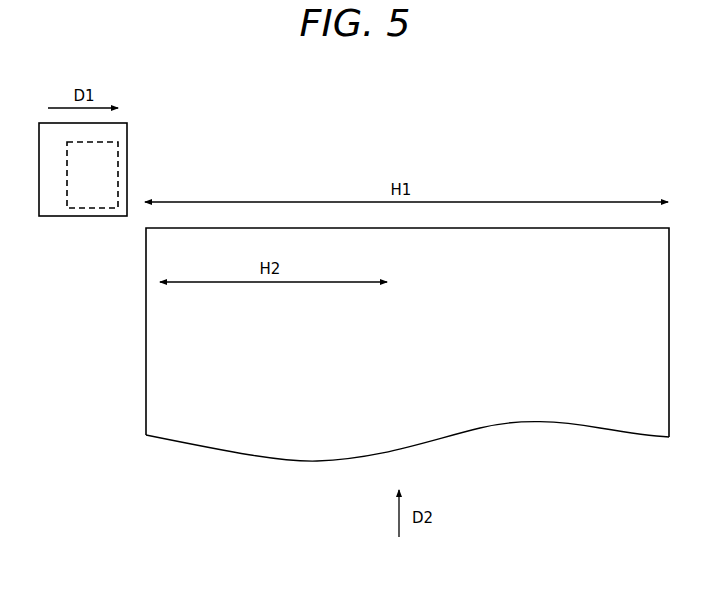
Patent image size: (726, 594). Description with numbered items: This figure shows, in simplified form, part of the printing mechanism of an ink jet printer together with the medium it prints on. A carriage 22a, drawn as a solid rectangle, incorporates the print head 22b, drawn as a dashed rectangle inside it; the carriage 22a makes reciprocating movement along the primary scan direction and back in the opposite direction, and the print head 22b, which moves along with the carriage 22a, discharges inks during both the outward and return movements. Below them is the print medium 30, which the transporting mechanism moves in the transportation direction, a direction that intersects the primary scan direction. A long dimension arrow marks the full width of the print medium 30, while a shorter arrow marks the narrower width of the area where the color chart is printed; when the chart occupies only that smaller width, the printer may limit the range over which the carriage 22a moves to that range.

The carriage 22a is at (62, 216).
The print head 22b is at (103, 208).
The print medium 30 is at (151, 423).